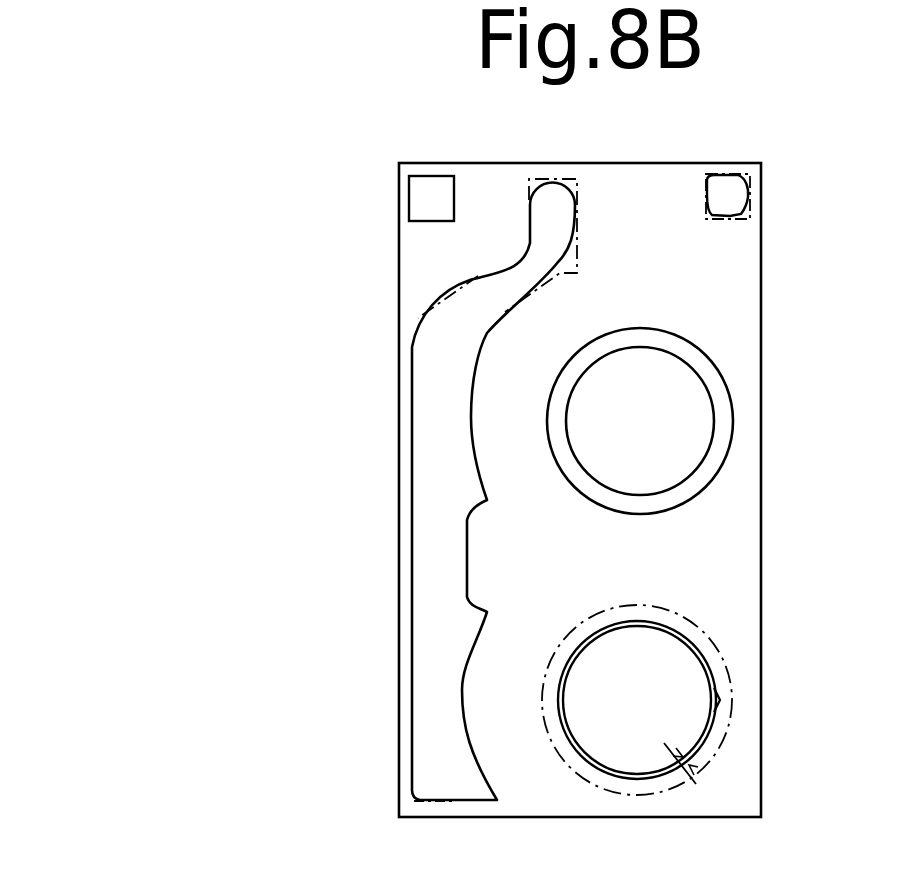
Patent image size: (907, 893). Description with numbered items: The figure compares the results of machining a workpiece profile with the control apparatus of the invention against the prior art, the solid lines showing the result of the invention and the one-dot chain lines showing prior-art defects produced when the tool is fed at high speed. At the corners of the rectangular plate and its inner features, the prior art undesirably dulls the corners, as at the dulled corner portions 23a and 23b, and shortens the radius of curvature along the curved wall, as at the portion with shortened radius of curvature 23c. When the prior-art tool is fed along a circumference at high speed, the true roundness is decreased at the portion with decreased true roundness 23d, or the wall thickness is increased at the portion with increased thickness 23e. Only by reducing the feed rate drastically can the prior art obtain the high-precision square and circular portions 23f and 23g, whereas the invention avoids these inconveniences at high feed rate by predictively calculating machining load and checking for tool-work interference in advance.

The high-precision machined portion 23f is at (424, 158).
The portion with shortened radius of curvature 23c is at (422, 290).
The dulled corner portion 23b is at (407, 800).
The dulled corner portion 23a is at (614, 248).
The high-precision machined circular portion 23g is at (745, 411).
The portion with decreased true roundness 23d is at (713, 652).
The portion with increased thickness 23e is at (680, 762).